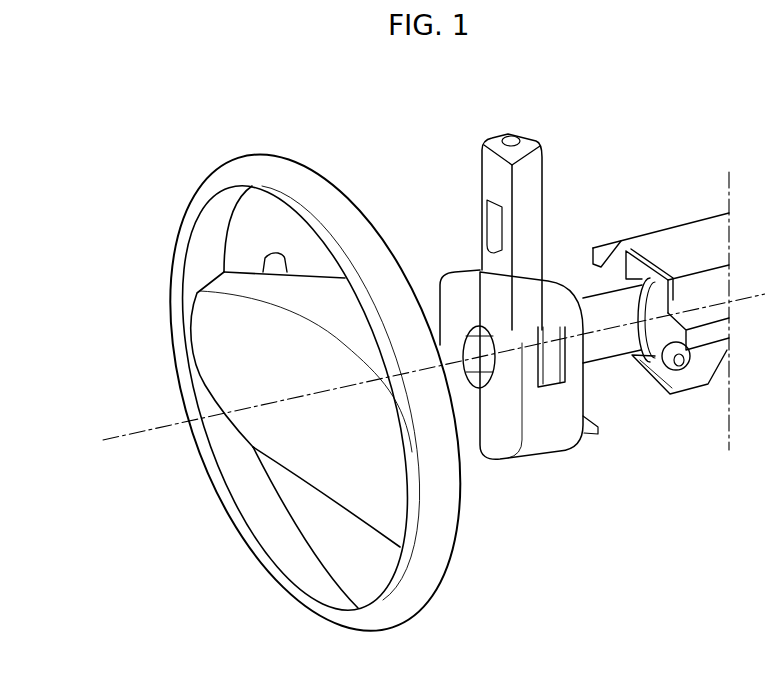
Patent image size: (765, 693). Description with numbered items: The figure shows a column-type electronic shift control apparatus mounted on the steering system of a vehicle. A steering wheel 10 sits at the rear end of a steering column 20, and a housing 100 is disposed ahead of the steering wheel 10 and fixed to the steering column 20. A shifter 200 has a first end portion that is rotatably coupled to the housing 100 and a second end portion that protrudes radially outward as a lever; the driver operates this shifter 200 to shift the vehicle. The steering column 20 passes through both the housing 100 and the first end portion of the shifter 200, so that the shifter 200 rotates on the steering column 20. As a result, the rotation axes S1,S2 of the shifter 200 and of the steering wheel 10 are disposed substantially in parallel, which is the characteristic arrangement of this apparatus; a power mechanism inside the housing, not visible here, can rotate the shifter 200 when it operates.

The steering wheel 10 is at (267, 172).
The steering column 20 is at (608, 352).
The housing 100 is at (545, 438).
The shifter 200 is at (490, 165).
The rotation axes of the shifter and steering wheel S1,S2 is at (396, 317).